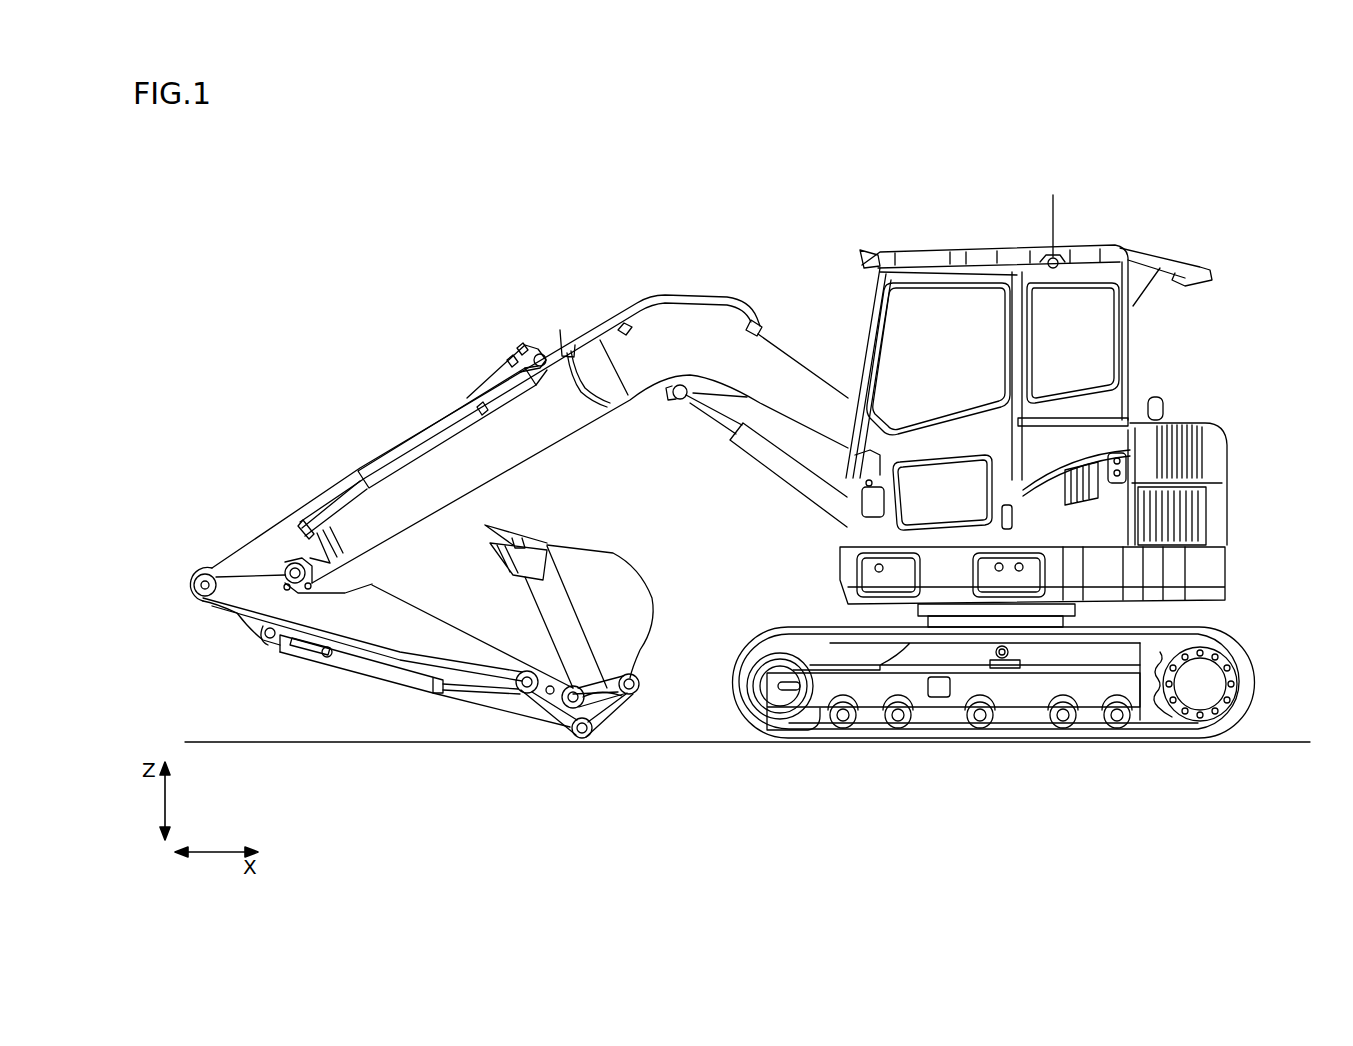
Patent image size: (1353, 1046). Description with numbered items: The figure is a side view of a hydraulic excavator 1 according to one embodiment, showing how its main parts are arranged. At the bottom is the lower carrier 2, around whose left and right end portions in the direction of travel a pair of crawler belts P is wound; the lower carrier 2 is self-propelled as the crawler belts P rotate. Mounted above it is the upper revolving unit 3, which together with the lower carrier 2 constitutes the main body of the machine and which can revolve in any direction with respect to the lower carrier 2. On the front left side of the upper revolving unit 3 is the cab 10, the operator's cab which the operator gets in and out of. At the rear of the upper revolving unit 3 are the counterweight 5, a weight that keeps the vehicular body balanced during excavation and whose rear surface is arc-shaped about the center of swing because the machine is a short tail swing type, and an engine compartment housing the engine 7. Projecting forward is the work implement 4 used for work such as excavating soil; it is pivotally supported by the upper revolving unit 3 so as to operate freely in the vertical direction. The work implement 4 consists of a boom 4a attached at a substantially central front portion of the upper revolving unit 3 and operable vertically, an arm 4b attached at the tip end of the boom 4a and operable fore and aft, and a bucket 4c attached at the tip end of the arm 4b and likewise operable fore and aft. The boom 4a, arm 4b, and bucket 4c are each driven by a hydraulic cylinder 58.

The hydraulic excavator 1 is at (1180, 177).
The lower carrier 2 is at (730, 696).
The upper revolving unit 3 is at (839, 567).
The work implement 4 is at (679, 272).
The boom 4a is at (485, 450).
The arm 4b is at (357, 628).
The bucket 4c is at (605, 578).
The counterweight 5 is at (1223, 562).
The engine 7 is at (1206, 466).
The cab 10 is at (862, 222).
The hydraulic cylinder 58 is at (384, 458).
The crawler belt P is at (1234, 654).